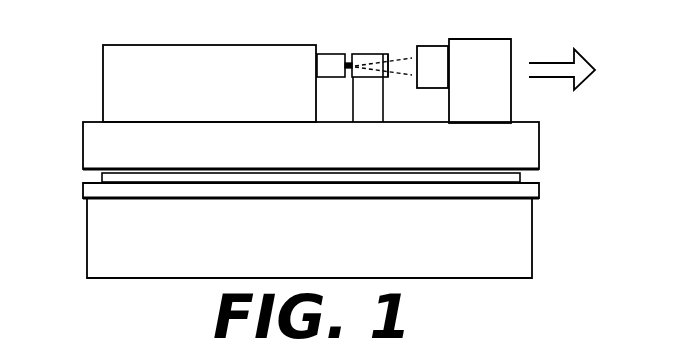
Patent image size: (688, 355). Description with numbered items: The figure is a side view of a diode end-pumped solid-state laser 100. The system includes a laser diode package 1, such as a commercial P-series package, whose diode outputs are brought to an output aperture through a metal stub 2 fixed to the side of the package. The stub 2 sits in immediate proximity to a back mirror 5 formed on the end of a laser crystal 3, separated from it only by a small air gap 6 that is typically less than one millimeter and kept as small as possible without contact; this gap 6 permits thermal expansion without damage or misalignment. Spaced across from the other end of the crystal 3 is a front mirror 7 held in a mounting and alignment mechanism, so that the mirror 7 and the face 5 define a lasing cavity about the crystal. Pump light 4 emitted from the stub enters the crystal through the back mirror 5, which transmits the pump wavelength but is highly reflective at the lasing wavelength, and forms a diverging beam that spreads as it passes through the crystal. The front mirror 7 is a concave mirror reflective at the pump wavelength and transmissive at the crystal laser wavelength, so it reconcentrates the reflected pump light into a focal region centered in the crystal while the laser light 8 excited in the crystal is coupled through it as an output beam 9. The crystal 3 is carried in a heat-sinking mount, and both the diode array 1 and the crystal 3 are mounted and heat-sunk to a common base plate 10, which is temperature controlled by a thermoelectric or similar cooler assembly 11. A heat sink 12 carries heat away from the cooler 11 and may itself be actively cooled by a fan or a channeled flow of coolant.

The diode end-pumped solid-state laser 100 is at (88, 30).
The laser diode package 1 is at (193, 44).
The metal stub 2 is at (328, 78).
The air gap 6 is at (350, 53).
The back mirror 5 is at (352, 54).
The pump light 4 is at (383, 54).
The laser crystal 3 is at (387, 54).
The laser light 8 is at (410, 55).
The front mirror 7 is at (437, 38).
The output beam 9 is at (568, 69).
The common base plate 10 is at (83, 140).
The cooler assembly 11 is at (100, 178).
The heat sink 12 is at (83, 187).